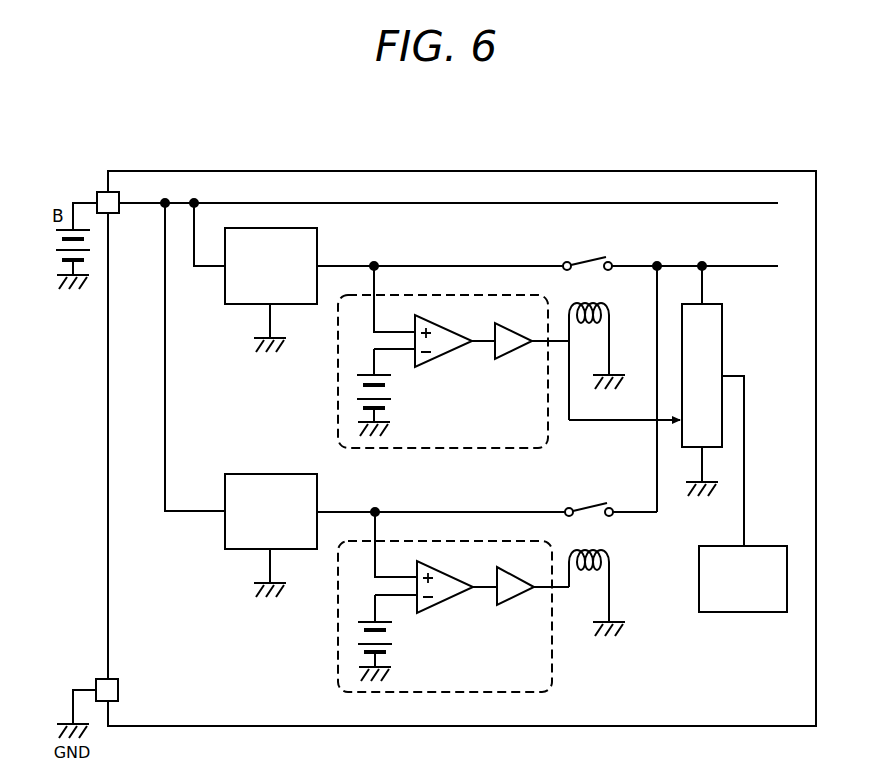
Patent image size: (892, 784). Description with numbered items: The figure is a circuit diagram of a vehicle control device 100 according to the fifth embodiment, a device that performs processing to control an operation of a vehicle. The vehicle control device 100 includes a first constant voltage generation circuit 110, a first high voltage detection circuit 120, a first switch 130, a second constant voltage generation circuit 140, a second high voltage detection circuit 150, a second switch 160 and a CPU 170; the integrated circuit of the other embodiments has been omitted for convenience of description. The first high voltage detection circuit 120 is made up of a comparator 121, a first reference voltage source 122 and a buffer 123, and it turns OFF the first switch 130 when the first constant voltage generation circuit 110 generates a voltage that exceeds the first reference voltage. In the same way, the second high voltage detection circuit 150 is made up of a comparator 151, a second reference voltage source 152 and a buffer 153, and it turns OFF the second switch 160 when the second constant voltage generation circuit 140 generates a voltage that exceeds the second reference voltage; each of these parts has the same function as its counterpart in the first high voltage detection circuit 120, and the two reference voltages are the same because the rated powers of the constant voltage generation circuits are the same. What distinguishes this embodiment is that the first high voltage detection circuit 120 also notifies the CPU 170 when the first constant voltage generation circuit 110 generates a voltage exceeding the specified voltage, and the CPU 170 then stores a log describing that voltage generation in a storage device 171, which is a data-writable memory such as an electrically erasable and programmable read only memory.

The vehicle control device 100 is at (460, 171).
The first constant voltage generation circuit 110 is at (240, 304).
The first high voltage detection circuit 120 is at (338, 373).
The comparator 121 is at (443, 355).
The first reference voltage source 122 is at (404, 399).
The buffer 123 is at (512, 355).
The first switch 130 is at (572, 250).
The second constant voltage generation circuit 140 is at (239, 549).
The second high voltage detection circuit 150 is at (338, 617).
The comparator 151 is at (443, 602).
The second reference voltage source 152 is at (404, 646).
The buffer 153 is at (512, 600).
The second switch 160 is at (570, 495).
The CPU 170 is at (710, 304).
The storage device 171 is at (743, 612).